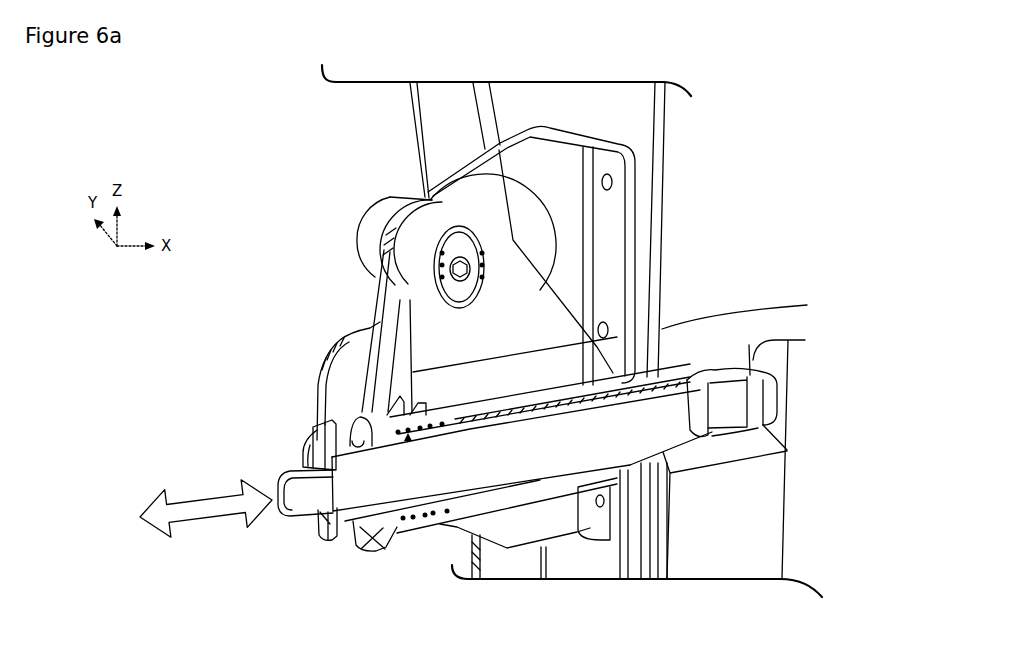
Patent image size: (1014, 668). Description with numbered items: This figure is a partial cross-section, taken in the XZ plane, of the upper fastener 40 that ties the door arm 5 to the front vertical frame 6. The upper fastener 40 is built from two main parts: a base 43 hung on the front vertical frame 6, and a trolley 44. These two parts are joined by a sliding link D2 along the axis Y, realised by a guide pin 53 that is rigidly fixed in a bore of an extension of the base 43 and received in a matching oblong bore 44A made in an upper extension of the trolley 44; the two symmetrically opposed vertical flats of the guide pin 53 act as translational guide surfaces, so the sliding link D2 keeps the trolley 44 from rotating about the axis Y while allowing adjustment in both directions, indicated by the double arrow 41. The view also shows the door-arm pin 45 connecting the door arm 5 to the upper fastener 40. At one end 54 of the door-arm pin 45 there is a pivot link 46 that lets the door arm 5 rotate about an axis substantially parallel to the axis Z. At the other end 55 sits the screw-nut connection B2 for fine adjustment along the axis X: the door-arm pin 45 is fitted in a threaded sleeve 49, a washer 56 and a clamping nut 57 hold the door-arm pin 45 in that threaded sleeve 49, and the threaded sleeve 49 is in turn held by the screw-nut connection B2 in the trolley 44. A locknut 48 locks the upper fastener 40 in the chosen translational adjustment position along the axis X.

The front vertical frame 6 is at (622, 118).
The base 43 is at (545, 228).
The trolley 44 is at (523, 332).
The oblong bore 44A is at (447, 243).
The guide pin 53 is at (440, 246).
The sliding link D2 is at (442, 270).
The washer 56 is at (312, 430).
The clamping nut 57 is at (287, 468).
The other end 55 is at (258, 467).
The upper fastener 40 is at (204, 403).
The sliding direction 41 is at (187, 508).
The threaded sleeve 49 is at (342, 532).
The locknut 48 is at (387, 535).
The screw-nut connection B2 is at (432, 520).
The door-arm pin 45 is at (545, 452).
The door arm 5 is at (737, 522).
The end 54 is at (733, 438).
The pivot link 46 is at (720, 408).